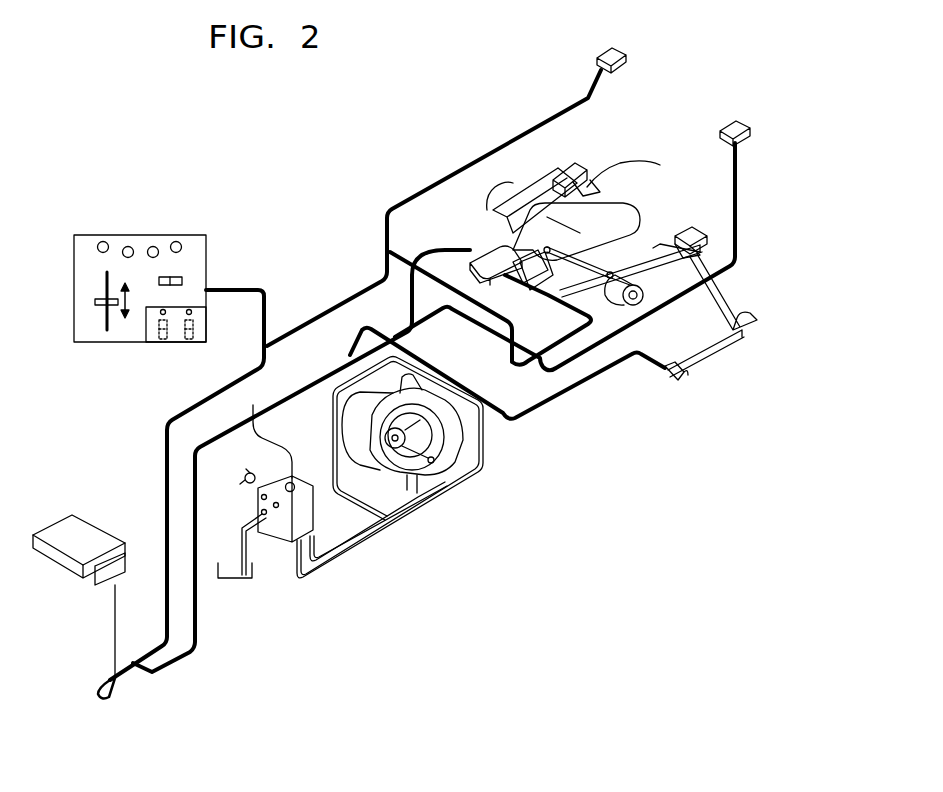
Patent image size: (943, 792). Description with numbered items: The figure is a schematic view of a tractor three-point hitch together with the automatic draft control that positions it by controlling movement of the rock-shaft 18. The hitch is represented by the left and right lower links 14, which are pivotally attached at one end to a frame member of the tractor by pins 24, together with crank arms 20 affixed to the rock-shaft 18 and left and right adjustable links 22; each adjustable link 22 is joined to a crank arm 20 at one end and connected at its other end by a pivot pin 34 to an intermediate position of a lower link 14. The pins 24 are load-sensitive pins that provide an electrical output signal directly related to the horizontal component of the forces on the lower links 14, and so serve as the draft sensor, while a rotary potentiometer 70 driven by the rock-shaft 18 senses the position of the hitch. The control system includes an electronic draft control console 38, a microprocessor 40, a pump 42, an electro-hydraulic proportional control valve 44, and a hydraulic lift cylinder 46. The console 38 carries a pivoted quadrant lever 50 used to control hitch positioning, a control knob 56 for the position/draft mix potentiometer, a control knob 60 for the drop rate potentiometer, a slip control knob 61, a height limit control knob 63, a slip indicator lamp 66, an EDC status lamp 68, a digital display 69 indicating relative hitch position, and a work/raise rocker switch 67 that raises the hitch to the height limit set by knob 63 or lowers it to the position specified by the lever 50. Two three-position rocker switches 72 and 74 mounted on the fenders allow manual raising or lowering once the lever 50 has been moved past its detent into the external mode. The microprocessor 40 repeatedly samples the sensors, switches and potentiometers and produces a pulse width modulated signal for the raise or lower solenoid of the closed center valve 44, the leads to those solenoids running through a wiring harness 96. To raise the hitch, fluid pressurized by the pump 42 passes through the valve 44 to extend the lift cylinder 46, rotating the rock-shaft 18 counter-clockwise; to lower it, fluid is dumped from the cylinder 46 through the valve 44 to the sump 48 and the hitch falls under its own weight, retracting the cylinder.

The lower links 14 is at (628, 325).
The rock-shaft 18 is at (645, 298).
The crank arms 20 is at (558, 167).
The adjustable links 22 is at (585, 197).
The pins 24 is at (598, 365).
The pivot pin 34 is at (655, 248).
The electronic draft control console 38 is at (226, 244).
The microprocessor 40 is at (97, 518).
The pump 42 is at (433, 392).
The electro-hydraulic proportional control valve 44 is at (253, 500).
The hydraulic lift cylinder 46 is at (480, 262).
The sump 48 is at (253, 567).
The quadrant lever 50 is at (95, 300).
The control knob 56 is at (152, 246).
The control knob 60 is at (178, 241).
The slip control knob 61 is at (101, 241).
The height limit control knob 63 is at (126, 246).
The slip indicator lamp 66 is at (163, 315).
The work/raise rocker switch 67 is at (184, 281).
The EDC status lamp 68 is at (192, 312).
The digital display 69 is at (203, 340).
The rotary potentiometer 70 is at (490, 200).
The rocker switch 72 is at (624, 68).
The rocker switch 74 is at (750, 137).
The wiring harness 96 is at (257, 410).